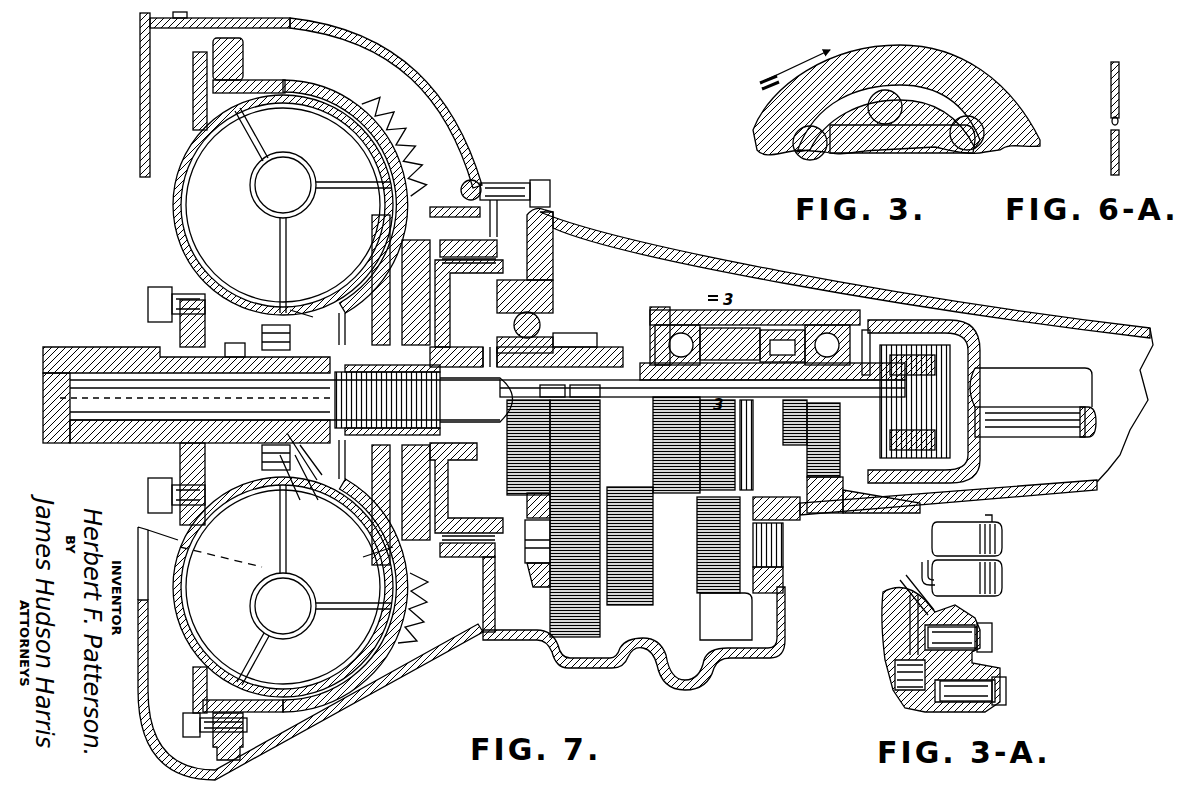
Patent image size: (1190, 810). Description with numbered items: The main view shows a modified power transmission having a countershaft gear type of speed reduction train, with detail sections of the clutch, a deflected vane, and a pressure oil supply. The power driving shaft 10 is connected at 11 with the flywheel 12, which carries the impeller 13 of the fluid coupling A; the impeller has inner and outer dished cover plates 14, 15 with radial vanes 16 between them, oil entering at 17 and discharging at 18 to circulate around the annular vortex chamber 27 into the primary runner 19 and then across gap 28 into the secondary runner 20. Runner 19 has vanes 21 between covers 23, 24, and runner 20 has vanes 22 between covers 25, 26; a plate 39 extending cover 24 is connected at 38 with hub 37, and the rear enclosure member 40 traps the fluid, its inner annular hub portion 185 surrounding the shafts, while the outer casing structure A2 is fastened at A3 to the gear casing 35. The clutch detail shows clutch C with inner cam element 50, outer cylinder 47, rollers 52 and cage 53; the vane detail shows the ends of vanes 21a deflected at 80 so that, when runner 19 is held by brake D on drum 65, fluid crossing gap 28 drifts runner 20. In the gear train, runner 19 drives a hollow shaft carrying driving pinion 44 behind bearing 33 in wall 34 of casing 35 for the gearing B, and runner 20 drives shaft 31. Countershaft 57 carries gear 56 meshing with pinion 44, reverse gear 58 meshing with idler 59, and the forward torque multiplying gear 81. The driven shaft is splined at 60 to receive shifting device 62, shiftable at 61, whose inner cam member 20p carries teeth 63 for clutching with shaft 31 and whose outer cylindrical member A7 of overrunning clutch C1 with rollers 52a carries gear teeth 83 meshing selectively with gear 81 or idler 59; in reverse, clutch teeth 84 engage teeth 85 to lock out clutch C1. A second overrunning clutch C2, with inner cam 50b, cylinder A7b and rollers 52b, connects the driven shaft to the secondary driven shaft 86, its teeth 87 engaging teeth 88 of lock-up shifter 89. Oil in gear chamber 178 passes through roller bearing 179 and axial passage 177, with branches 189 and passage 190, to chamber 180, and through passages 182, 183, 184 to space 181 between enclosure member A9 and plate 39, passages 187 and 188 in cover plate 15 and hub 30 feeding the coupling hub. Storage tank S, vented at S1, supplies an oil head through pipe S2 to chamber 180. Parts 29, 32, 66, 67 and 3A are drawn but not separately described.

In FIG. 7, the power driving shaft 10 is at (108, 347).
In FIG. 7, the flywheel connection 11 is at (148, 298).
In FIG. 7, the flywheel 12 is at (190, 100).
In FIG. 7, the impeller member 13 is at (208, 187).
In FIG. 7, the inner cover plate 14 is at (255, 205).
In FIG. 7, the outer cover plate 15 is at (140, 158).
In FIG. 7, the vanes 16 is at (200, 210).
In FIG. 7, the fluid entry 17 is at (286, 262).
In FIG. 7, the fluid discharge 18 is at (258, 133).
In FIG. 7, the primary runner segment 19 is at (345, 98).
In FIG. 7, the secondary runner segment 20 is at (416, 196).
In FIG. 7, the radial vanes 21 is at (380, 116).
In FIG. 7, the radial vanes 22 is at (283, 185).
In FIG. 6A, the radial vanes 22 is at (1120, 160).
In FIG. 7, the cover 23 is at (308, 170).
In FIG. 7, the cover 24 is at (365, 181).
In FIG. 7, the cover 25 is at (325, 212).
In FIG. 7, the cover 26 is at (345, 250).
In FIG. 7, the annular vortex chamber 27 is at (250, 180).
In FIG. 7, the gap 28 is at (405, 166).
In FIG. 6A, the gap 28 is at (1120, 121).
In FIG. 7, the bearing 29 is at (265, 340).
In FIG. 7, the hub 30 is at (210, 450).
In FIG. 7, the shaft 31 is at (292, 485).
In FIG. 7, the housing lug 32 is at (90, 443).
In FIG. 7, the bearing 33 is at (575, 338).
In FIG. 7, the casing wall 34 is at (770, 312).
In FIG. 7, the gear casing 35 is at (672, 293).
In FIG. 7, the hub 37 is at (381, 416).
In FIG. 7, the hub connection 38 is at (310, 522).
In FIG. 7, the plate 39 is at (290, 562).
In FIG. 7, the rear enclosure member 40 is at (412, 670).
In FIG. 7, the driving pinion 44 is at (598, 335).
In FIG. 7, the inner cam 50b is at (960, 347).
In FIG. 7, the rollers 52a is at (780, 330).
In FIG. 7, the rollers 52b is at (975, 298).
In FIG. 7, the gear 56 is at (608, 640).
In FIG. 7, the countershaft 57 is at (785, 535).
In FIG. 7, the reverse gear 58 is at (748, 598).
In FIG. 7, the idler 59 is at (700, 497).
In FIG. 7, the spline 60 is at (725, 375).
In FIG. 7, the shifting location 61 is at (770, 490).
In FIG. 7, the shifting device 62 is at (822, 325).
In FIG. 7, the clutch teeth 63 is at (668, 326).
In FIG. 7, the drum 65 is at (462, 280).
In FIG. 7, the bearing 66 is at (470, 580).
In FIG. 3A, the bearing 66 is at (893, 688).
In FIG. 7, the bearing housing 67 is at (480, 515).
In FIG. 7, the torque multiplying gear 81 is at (650, 604).
In FIG. 7, the gear teeth 83 is at (695, 426).
In FIG. 7, the clutch teeth 84 is at (778, 362).
In FIG. 7, the teeth 85 is at (800, 420).
In FIG. 7, the secondary driven shaft 86 is at (1020, 385).
In FIG. 7, the teeth 87 is at (908, 330).
In FIG. 7, the teeth 88 is at (878, 330).
In FIG. 7, the lock-up shifter 89 is at (866, 345).
In FIG. 7, the axial passage 177 is at (380, 398).
In FIG. 7, the gear chamber 178 is at (1033, 483).
In FIG. 7, the roller bearing 179 is at (589, 383).
In FIG. 7, the oil chamber 180 is at (705, 670).
In FIG. 7, the space 181 is at (468, 230).
In FIG. 7, the passage 182 is at (440, 340).
In FIG. 7, the passage 183 is at (419, 407).
In FIG. 7, the passage 184 is at (376, 407).
In FIG. 7, the inner annular hub portion 185 is at (392, 375).
In FIG. 7, the passage 187 is at (230, 342).
In FIG. 7, the passage 188 is at (188, 347).
In FIG. 7, the branches 189 is at (195, 392).
In FIG. 7, the passage 190 is at (557, 383).
In FIG. 7, the clutch ring 20p is at (700, 360).
In FIG. 7, the bearing 3A is at (555, 298).
In FIG. 7, the fluid coupling A is at (400, 130).
In FIG. 7, the outer casing structure A2 is at (398, 56).
In FIG. 3A, the outer casing structure A2 is at (900, 582).
In FIG. 7, the fastening A3 is at (512, 183).
In FIG. 3A, the fastening A3 is at (994, 637).
In FIG. 7, the outer cylindrical member A7 is at (728, 328).
In FIG. 7, the cylinder A7b is at (918, 320).
In FIG. 3A, the enclosure member A9 is at (1000, 680).
In FIG. 7, the gearing B is at (705, 295).
In FIG. 7, the overrunning clutch C1 is at (748, 328).
In FIG. 7, the second overrunning clutch C2 is at (930, 330).
In FIG. 7, the brake D is at (522, 242).
In FIG. 3, the cylinder 47 is at (930, 62).
In FIG. 3, the clutch C is at (972, 76).
In FIG. 3, the cage 53 is at (988, 97).
In FIG. 3, the inner cam element 50 is at (870, 155).
In FIG. 3, the clutch rollers 52 is at (975, 150).
In FIG. 6A, the vanes 21a is at (1120, 95).
In FIG. 6A, the deflection 80 is at (1112, 118).
In FIG. 3A, the storage tank S is at (1003, 575).
In FIG. 3A, the vent S1 is at (1000, 521).
In FIG. 3A, the pipe S2 is at (921, 568).